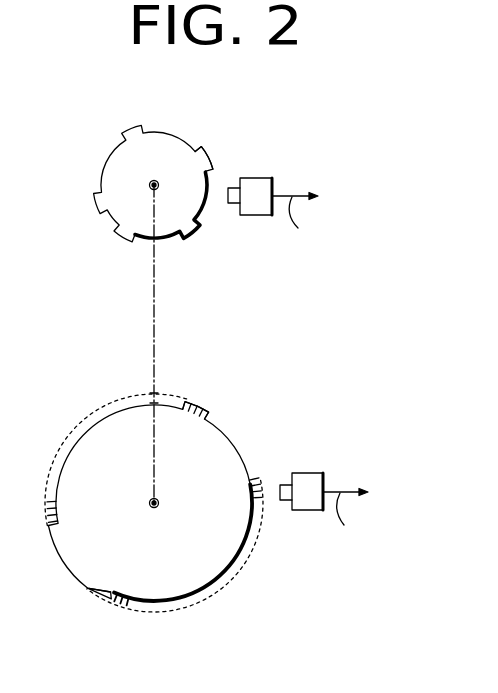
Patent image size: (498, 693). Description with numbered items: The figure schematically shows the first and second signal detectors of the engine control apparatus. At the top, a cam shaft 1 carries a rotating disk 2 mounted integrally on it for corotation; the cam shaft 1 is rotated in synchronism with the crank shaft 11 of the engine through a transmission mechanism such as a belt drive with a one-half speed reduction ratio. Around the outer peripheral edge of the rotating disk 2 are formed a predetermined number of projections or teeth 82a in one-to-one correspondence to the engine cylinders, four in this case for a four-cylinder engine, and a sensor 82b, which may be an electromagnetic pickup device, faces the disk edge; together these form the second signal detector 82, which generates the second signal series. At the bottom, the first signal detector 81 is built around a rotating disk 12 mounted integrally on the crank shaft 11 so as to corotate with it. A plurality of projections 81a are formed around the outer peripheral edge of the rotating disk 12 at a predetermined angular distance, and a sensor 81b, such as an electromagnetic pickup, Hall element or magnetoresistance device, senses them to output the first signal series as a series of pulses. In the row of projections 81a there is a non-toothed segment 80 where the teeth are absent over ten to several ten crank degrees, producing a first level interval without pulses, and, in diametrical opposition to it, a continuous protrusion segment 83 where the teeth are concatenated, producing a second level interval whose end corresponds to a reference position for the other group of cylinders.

The cam shaft 1 is at (155, 181).
The rotating disk 2 is at (167, 218).
The crank shaft 11 is at (153, 501).
The rotating disk 12 is at (212, 585).
The non-toothed segment 80 is at (239, 448).
The first signal detector 81 is at (366, 488).
The projections 81a is at (209, 411).
The sensor 81b is at (311, 473).
The second signal detector 82 is at (320, 193).
The projections 82a is at (207, 147).
The sensor 82b is at (265, 178).
The continuous protrusion segment 83 is at (87, 588).